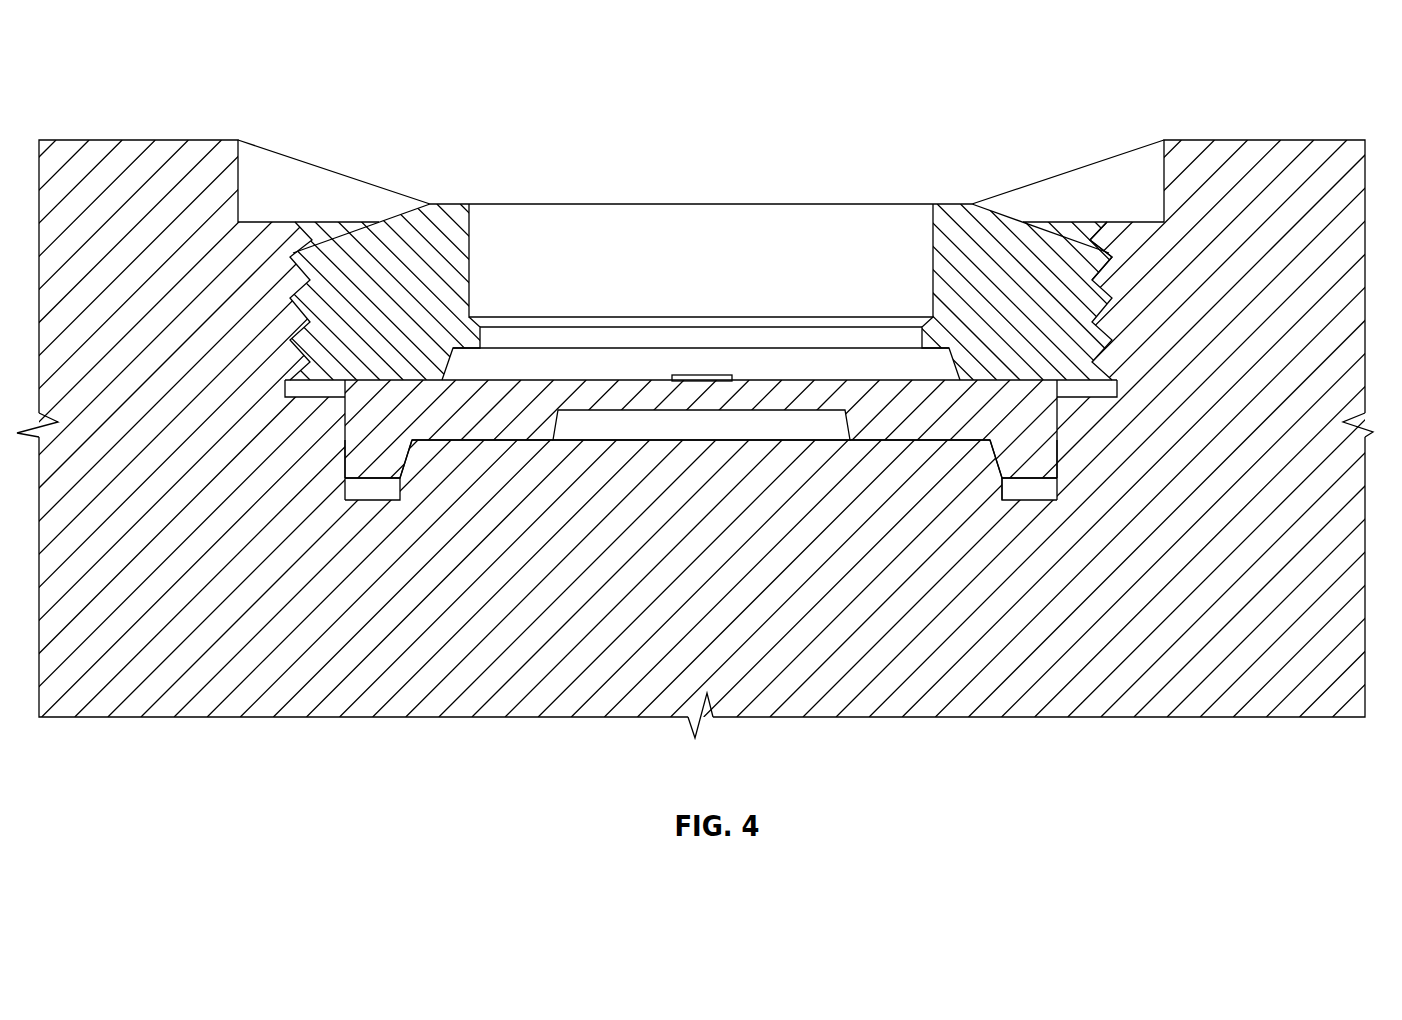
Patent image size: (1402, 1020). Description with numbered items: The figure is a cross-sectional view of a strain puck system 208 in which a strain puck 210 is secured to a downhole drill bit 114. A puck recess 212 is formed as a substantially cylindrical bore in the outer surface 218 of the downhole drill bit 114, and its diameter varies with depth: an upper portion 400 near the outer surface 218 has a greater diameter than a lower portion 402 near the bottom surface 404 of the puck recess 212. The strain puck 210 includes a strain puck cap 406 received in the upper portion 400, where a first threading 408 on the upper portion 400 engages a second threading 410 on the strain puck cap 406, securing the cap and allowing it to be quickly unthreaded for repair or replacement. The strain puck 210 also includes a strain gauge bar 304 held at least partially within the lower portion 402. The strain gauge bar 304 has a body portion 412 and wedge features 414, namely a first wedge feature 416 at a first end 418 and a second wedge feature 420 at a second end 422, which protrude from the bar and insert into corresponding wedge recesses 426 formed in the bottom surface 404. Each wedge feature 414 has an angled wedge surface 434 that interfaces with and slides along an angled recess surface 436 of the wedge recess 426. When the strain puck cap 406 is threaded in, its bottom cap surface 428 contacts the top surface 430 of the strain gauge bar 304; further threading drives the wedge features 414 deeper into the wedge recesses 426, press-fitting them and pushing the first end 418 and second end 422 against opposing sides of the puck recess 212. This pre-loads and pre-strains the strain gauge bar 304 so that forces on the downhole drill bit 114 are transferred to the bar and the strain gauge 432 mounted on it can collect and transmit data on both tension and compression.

The downhole drill bit 114 is at (1137, 678).
The outer surface 218 is at (96, 140).
The strain puck system 208 is at (718, 110).
The strain puck 210 is at (907, 178).
The strain gauge bar 304 is at (875, 398).
The upper portion 400 is at (283, 279).
The strain puck cap 406 is at (455, 225).
The first threading 408 is at (1112, 268).
The second threading 410 is at (1090, 250).
The top surface 430 is at (573, 380).
The puck recess 212 is at (284, 388).
The bottom cap surface 428 is at (1097, 398).
The lower portion 402 is at (341, 440).
The bottom surface 404 is at (584, 440).
The strain gauge 432 is at (690, 382).
The body portion 412 is at (460, 413).
The wedge feature 414 is at (382, 462).
The first wedge feature 416 is at (367, 468).
The first end 418 is at (343, 468).
The wedge recess 426 is at (343, 493).
The second wedge feature 420 is at (1025, 467).
The second end 422 is at (1061, 459).
The angled wedge surface 434 is at (999, 443).
The angled recess surface 436 is at (1001, 489).